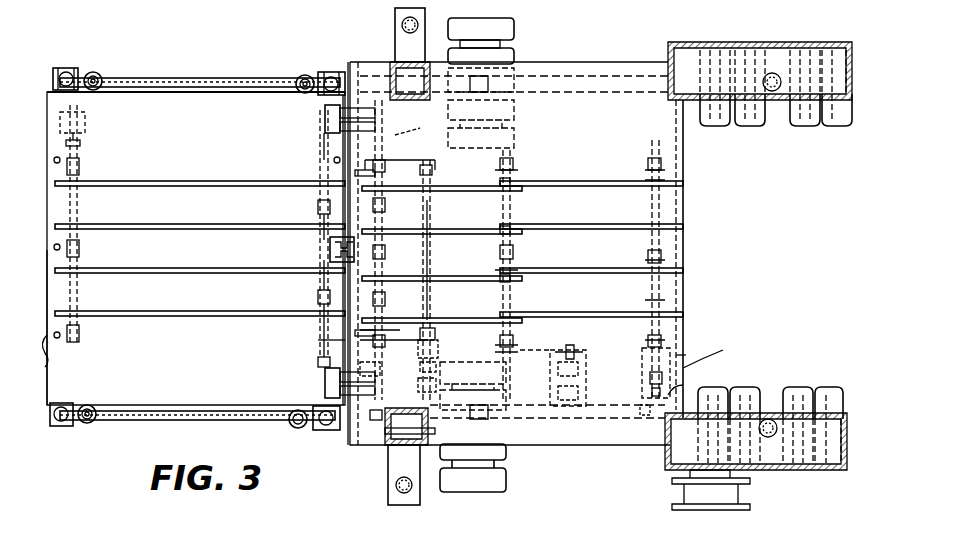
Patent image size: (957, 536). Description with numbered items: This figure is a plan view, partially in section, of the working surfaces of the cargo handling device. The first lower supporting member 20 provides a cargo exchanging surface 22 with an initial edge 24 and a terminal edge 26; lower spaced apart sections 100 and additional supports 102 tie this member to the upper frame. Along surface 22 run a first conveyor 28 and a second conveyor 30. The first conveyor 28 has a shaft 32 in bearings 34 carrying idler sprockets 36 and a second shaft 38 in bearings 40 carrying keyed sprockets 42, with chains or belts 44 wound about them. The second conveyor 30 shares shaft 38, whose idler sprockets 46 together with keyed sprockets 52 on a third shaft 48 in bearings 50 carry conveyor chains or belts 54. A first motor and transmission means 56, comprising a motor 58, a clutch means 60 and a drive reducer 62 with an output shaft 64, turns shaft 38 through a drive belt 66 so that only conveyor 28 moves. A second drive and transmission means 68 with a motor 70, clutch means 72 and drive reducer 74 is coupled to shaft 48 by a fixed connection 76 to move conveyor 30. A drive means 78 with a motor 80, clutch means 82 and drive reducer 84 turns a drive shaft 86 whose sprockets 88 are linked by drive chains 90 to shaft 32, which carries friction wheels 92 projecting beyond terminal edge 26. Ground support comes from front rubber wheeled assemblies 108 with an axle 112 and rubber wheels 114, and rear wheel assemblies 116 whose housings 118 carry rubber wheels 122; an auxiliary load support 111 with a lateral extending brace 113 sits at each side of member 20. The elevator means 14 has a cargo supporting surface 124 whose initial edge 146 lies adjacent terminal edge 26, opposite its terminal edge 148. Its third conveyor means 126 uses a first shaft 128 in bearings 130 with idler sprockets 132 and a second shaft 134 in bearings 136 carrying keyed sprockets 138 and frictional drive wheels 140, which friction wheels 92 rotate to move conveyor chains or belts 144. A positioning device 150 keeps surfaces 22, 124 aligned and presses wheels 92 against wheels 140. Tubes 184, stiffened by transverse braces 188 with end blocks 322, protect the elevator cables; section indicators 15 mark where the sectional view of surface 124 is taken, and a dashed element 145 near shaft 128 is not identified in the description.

The elevator means 14 is at (214, 78).
The section line 15 is at (215, 172).
The first lower supporting member 20 is at (628, 62).
The cargo exchanging surface 22 is at (588, 129).
The initial edge 24 is at (686, 122).
The terminal edge 26 is at (348, 60).
The first conveyor 28 is at (506, 172).
The second conveyor 30 is at (582, 180).
The shaft 32 is at (376, 214).
The bearings 34 is at (386, 257).
The idler sprockets 36 is at (378, 293).
The second shaft 38 is at (512, 198).
The bearings 40 is at (514, 162).
The keyed sprockets 42 is at (496, 200).
The chains or belts 44 is at (442, 192).
The idler sprockets 46 is at (516, 175).
The third shaft 48 is at (650, 210).
The bearings 50 is at (668, 164).
The keyed sprockets 52 is at (644, 176).
The conveyor chains or belts 54 is at (568, 216).
The first motor and transmission means 56 is at (585, 390).
The motor 58 is at (554, 402).
The clutch means 60 is at (556, 386).
The transmission or drive reducer 62 is at (552, 362).
The output shaft 64 is at (578, 346).
The drive belt 66 is at (546, 350).
The second drive and transmission means 68 is at (640, 385).
The motor 70 is at (640, 412).
The clutch means 72 is at (689, 381).
The transmission or drive reducer 74 is at (703, 357).
The fixed connection 76 is at (692, 343).
The drive means 78 is at (440, 350).
The motor 80 is at (426, 442).
The clutch means 82 is at (420, 388).
The drive reducer 84 is at (418, 359).
The drive shaft 86 is at (430, 255).
The sprockets 88 is at (440, 160).
The drive chains 90 is at (407, 232).
The friction wheels 92 is at (378, 118).
The lower spaced apart sections 100 is at (700, 104).
The additional supports 102 is at (390, 66).
The rubber wheeled assemblies 108 is at (540, 62).
The auxiliary load support 111 is at (393, 22).
The axle 112 is at (505, 82).
The lateral extending brace 113 is at (394, 34).
The rubber wheels 114 is at (516, 28).
The rear wheel assemblies 116 is at (798, 44).
The housing 118 is at (770, 100).
The rubber wheels 122 is at (824, 122).
The cargo supporting surface 124 is at (170, 138).
The third conveyor means 126 is at (165, 318).
The first shaft 128 is at (80, 203).
The bearings 130 is at (79, 163).
The idler sprockets 132 is at (80, 178).
The second shaft 134 is at (318, 158).
The bearings 136 is at (312, 138).
The keyed sprockets 138 is at (318, 182).
The frictional drive wheels 140 is at (322, 110).
The conveyor chains or belts 144 is at (142, 222).
The switch 145 is at (86, 122).
The initial edge 146 is at (314, 340).
The terminal edge 148 is at (60, 350).
The positioning device 150 is at (328, 255).
The tubes 184 is at (100, 72).
The transverse braces 188 is at (156, 70).
The bearing block 322 is at (66, 66).